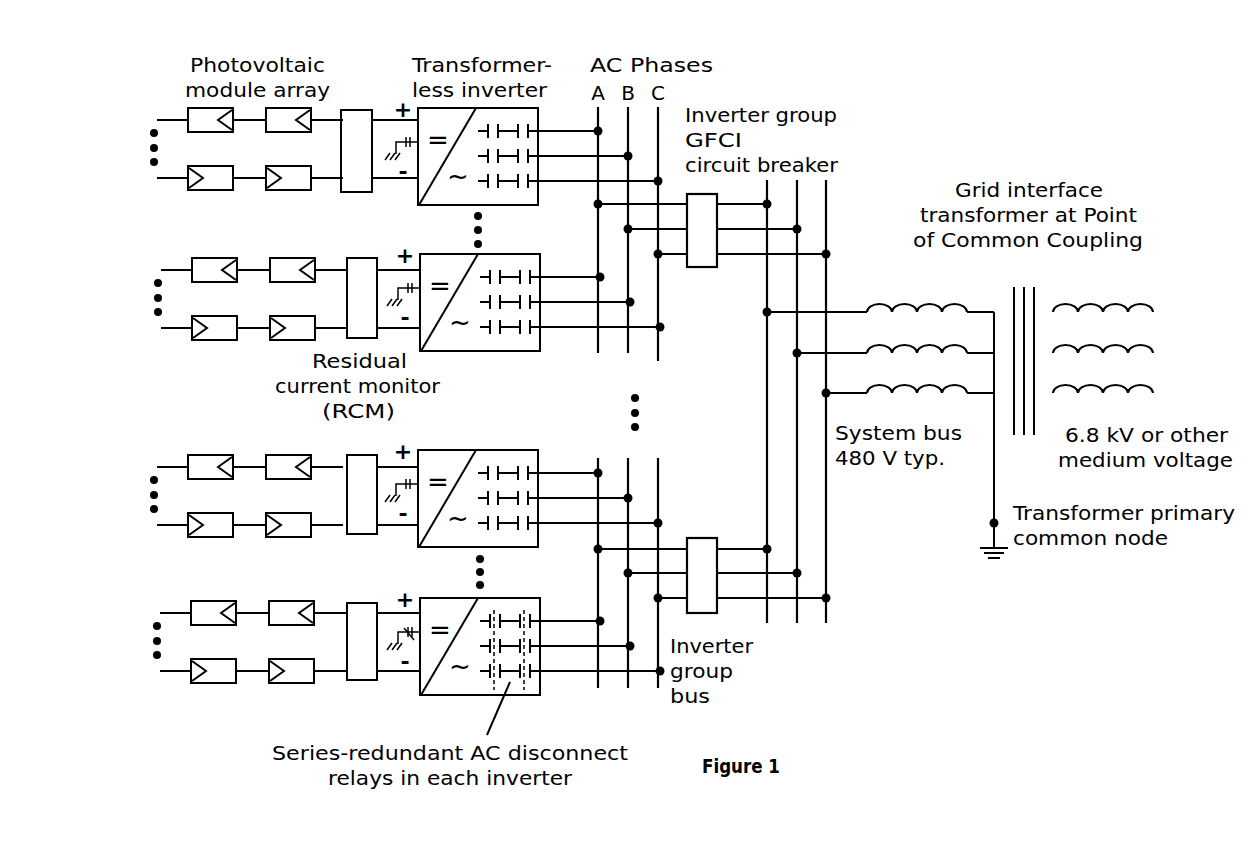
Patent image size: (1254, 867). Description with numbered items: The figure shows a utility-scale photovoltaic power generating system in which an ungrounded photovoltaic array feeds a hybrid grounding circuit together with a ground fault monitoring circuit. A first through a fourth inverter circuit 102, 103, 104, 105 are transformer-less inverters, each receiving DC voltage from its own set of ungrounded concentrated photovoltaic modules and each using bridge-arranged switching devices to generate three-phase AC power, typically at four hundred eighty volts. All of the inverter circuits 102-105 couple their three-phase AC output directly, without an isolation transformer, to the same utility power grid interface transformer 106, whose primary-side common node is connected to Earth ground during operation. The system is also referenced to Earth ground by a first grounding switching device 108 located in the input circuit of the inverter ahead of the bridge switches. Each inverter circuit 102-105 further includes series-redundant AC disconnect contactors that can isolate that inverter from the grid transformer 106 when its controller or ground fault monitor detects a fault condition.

The first inverter circuit 102 is at (524, 162).
The second inverter circuit 103 is at (526, 308).
The third inverter circuit 104 is at (524, 505).
The fourth inverter circuit 105 is at (526, 653).
The utility power grid interface transformer 106 is at (960, 403).
The first grounding switching device 108 is at (398, 626).